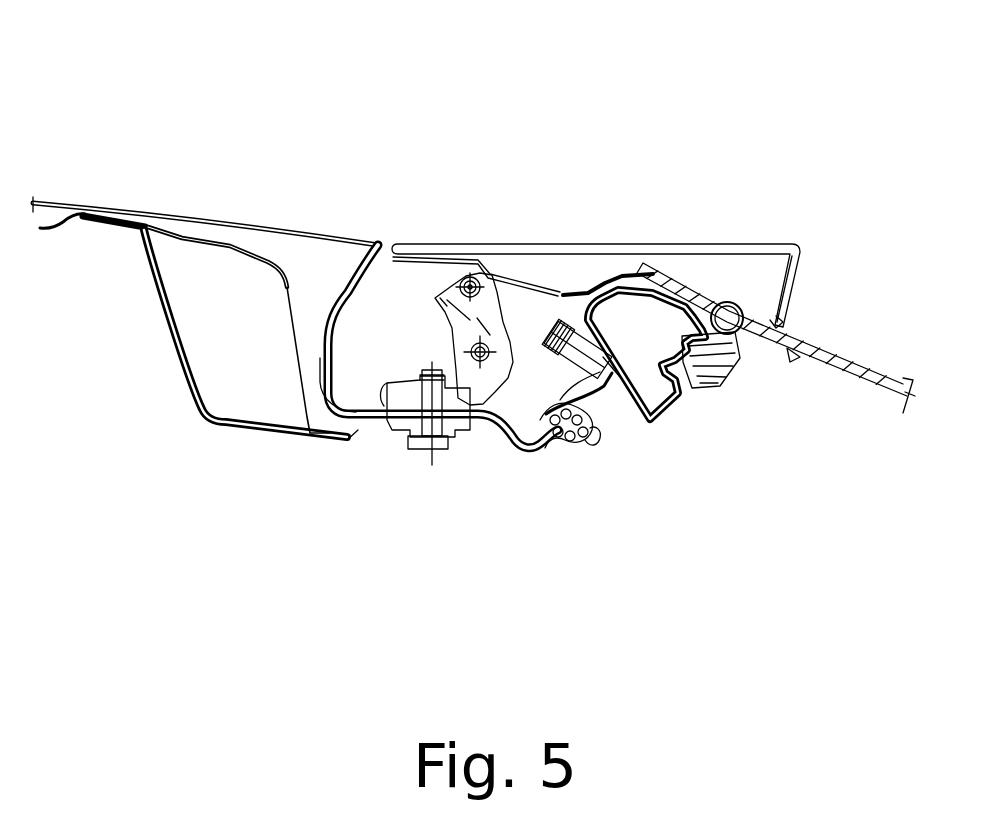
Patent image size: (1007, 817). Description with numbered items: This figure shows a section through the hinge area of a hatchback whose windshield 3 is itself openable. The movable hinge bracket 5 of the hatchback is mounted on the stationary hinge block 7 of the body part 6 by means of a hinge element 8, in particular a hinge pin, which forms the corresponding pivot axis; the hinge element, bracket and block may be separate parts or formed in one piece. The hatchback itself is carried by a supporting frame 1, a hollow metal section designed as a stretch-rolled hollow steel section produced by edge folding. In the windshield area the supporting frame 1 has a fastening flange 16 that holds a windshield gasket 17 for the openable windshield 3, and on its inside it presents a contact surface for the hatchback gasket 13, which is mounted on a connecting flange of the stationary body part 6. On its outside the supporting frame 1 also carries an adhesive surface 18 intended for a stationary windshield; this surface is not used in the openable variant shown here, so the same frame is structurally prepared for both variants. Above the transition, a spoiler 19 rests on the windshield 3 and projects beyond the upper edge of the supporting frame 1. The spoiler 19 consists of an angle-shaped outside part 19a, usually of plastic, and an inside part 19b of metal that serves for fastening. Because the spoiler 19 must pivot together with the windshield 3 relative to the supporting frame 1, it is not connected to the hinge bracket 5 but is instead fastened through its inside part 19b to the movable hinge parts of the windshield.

The supporting frame 1 is at (660, 425).
The windshield 3 is at (838, 362).
The hinge bracket 5 is at (545, 300).
The body part 6 is at (365, 419).
The hinge block 7 is at (486, 385).
The hinge element 8 is at (483, 273).
The hatchback gasket 13 is at (593, 410).
The fastening flange 16 is at (688, 390).
The windshield gasket 17 is at (740, 342).
The adhesive surface 18 is at (683, 282).
The spoiler 19 is at (604, 212).
The outside part 19a is at (782, 250).
The inside part 19b is at (605, 275).